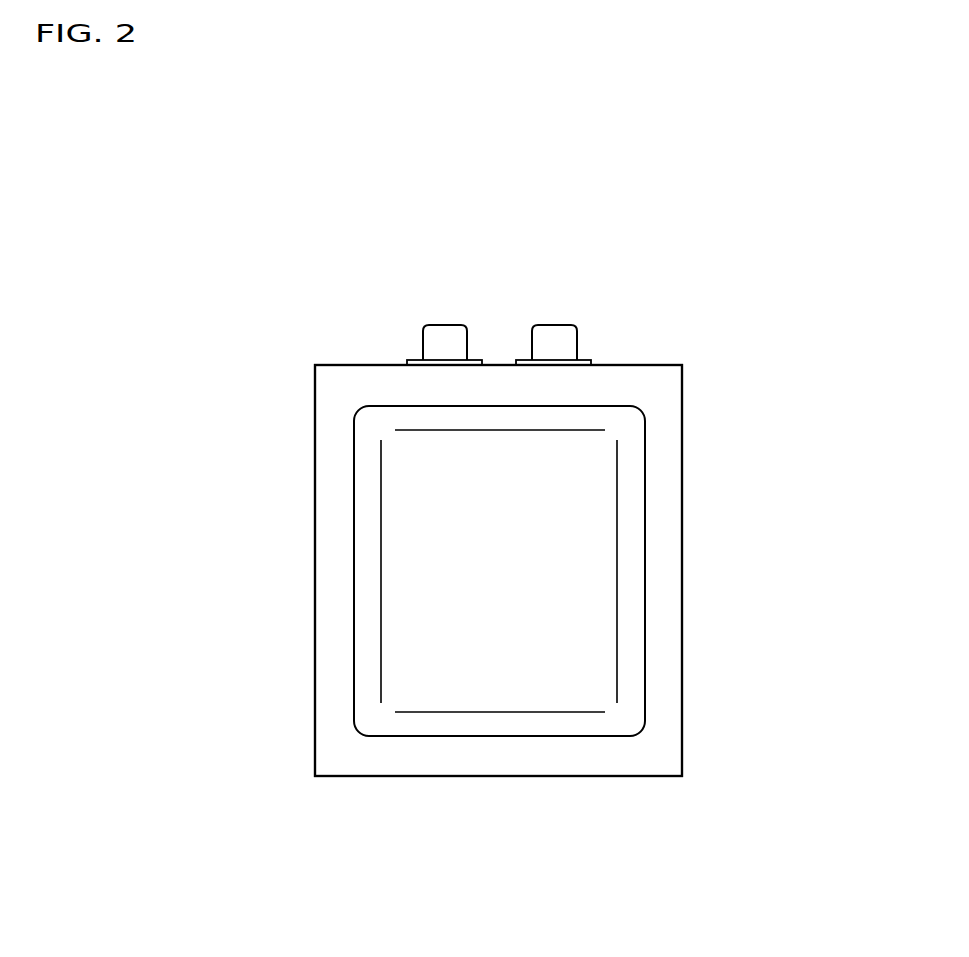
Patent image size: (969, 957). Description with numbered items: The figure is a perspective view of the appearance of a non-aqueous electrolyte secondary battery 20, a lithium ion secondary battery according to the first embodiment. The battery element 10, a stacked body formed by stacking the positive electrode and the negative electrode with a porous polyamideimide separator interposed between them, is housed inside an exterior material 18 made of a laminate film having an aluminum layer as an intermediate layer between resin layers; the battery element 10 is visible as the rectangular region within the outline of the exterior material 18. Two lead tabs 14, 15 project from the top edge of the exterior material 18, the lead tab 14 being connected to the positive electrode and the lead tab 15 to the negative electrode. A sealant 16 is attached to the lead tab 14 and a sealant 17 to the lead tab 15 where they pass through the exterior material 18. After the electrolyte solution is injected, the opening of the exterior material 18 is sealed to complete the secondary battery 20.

The battery element 10 is at (562, 523).
The lead tab 14 is at (447, 325).
The lead tab 15 is at (554, 325).
The sealant 16 is at (413, 358).
The sealant 17 is at (585, 358).
The exterior material 18 is at (498, 778).
The non-aqueous electrolyte secondary battery 20 is at (700, 227).